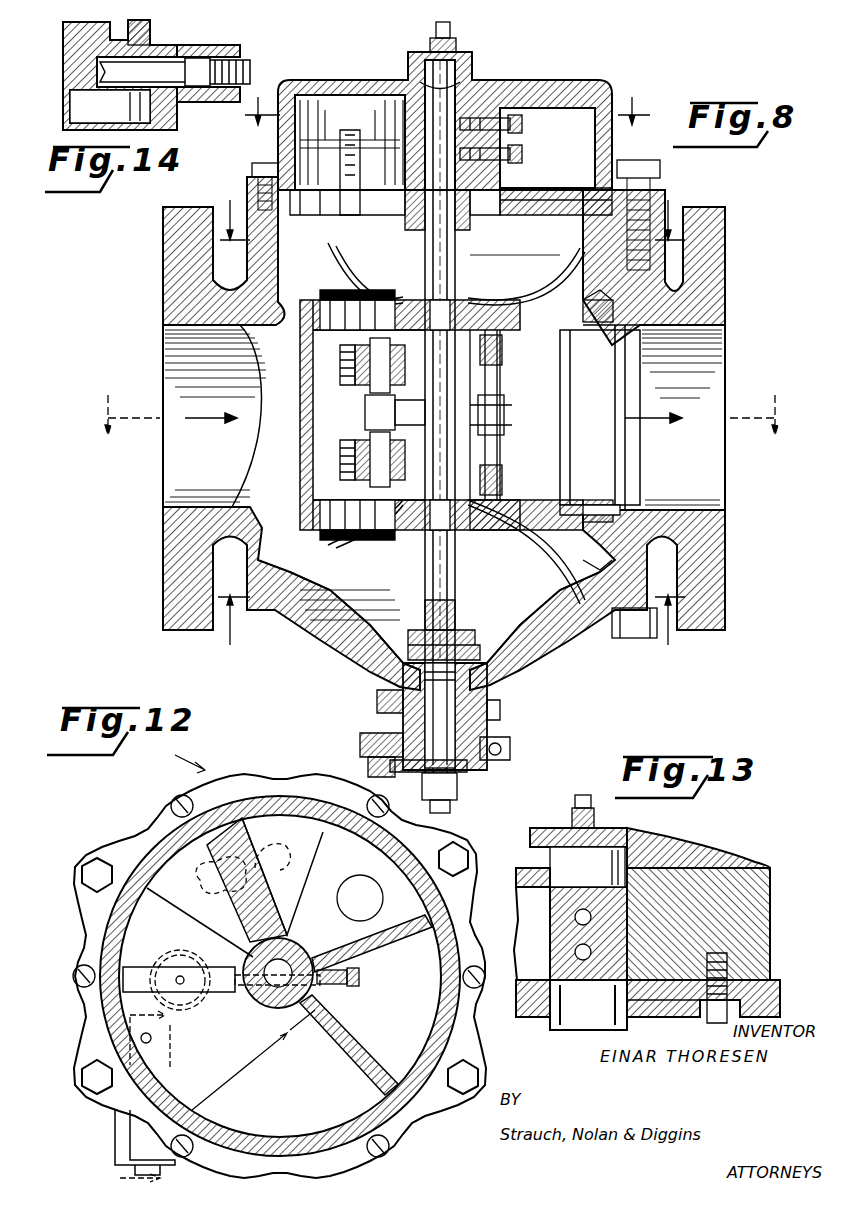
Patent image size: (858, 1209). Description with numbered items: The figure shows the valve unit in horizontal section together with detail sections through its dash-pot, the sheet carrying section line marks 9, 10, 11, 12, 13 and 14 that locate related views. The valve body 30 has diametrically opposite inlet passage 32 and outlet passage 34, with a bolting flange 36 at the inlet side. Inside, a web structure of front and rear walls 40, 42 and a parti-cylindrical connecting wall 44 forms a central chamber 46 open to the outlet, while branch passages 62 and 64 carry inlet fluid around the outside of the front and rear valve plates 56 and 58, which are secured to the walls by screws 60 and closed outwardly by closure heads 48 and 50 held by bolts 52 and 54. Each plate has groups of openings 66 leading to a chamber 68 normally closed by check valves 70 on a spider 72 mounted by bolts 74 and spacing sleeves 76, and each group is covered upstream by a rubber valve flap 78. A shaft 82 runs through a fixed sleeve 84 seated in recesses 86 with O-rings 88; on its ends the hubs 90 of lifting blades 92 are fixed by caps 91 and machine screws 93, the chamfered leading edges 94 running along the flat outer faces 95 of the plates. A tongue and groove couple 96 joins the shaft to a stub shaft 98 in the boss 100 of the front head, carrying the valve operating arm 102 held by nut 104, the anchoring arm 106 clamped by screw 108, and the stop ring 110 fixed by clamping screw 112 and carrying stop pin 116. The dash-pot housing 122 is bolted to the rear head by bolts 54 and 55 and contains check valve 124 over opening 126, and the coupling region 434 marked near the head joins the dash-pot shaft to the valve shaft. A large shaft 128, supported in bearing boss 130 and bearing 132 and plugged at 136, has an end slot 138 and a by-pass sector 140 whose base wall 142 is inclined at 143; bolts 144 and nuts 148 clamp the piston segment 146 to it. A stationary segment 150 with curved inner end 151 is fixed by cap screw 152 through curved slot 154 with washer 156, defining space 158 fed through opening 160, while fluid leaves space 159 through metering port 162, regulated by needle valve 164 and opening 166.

In FIG. 8, the section line 9- 9 is at (438, 405).
In FIG. 8, the section line 10- 10 is at (454, 210).
In FIG. 8, the section line 11- 11 is at (451, 632).
In FIG. 8, the section line 12- 12 is at (446, 128).
In FIG. 12, the section line 13- 13 is at (245, 926).
In FIG. 12, the section line 14- 14 is at (134, 1085).
In FIG. 8, the valve body 30 is at (255, 262).
In FIG. 8, the inlet passage 32 is at (178, 480).
In FIG. 8, the outlet passage 34 is at (720, 345).
In FIG. 8, the bolting flange 36 is at (170, 606).
In FIG. 8, the front wall 40 is at (574, 505).
In FIG. 8, the rear wall 42 is at (601, 345).
In FIG. 8, the parti-cylindrical connecting wall 44 is at (268, 440).
In FIG. 8, the central chamber 46 is at (369, 415).
In FIG. 8, the front closure head 48 is at (340, 645).
In FIG. 8, the rear closure head 50 is at (555, 210).
In FIG. 13, the rear closure head 50 is at (660, 1010).
In FIG. 8, the bolts 52 is at (612, 625).
In FIG. 8, the bolts 54 is at (662, 168).
In FIG. 12, the bolts 54 is at (97, 860).
In FIG. 8, the bolts 55 is at (250, 170).
In FIG. 12, the bolts 55 is at (170, 805).
In FIG. 8, the front valve plate 56 is at (523, 530).
In FIG. 8, the rear valve plate 58 is at (513, 288).
In FIG. 8, the screws 60 is at (612, 503).
In FIG. 8, the branch passage 62 is at (270, 550).
In FIG. 8, the branch passage 64 is at (290, 310).
In FIG. 8, the openings 66 is at (357, 428).
In FIG. 8, the chamber 68 is at (345, 462).
In FIG. 8, the check valves 70 is at (339, 412).
In FIG. 8, the spider 72 is at (512, 405).
In FIG. 8, the bolts 74 is at (500, 385).
In FIG. 8, the spacing sleeves 76 is at (502, 360).
In FIG. 8, the valve flap 78 is at (340, 298).
In FIG. 8, the shaft 82 is at (425, 424).
In FIG. 8, the fixed sleeve 84 is at (380, 412).
In FIG. 8, the recesses 86 is at (425, 296).
In FIG. 8, the O-rings 88 is at (410, 415).
In FIG. 8, the hub 90 is at (412, 270).
In FIG. 8, the caps 91 is at (488, 232).
In FIG. 8, the lifting blades 92 is at (385, 605).
In FIG. 8, the machine screws 93 is at (402, 620).
In FIG. 8, the chamfered leading edges 94 is at (556, 265).
In FIG. 8, the flat outer faces 95 is at (585, 298).
In FIG. 8, the tongue and groove driving couple 96 is at (478, 625).
In FIG. 8, the stub shaft 98 is at (460, 760).
In FIG. 8, the boss 100 is at (488, 680).
In FIG. 8, the valve operating arm 102 is at (458, 786).
In FIG. 8, the nut 104 is at (452, 806).
In FIG. 8, the anchoring arm 106 is at (385, 690).
In FIG. 8, the screw 108 is at (502, 710).
In FIG. 8, the stop ring 110 is at (356, 732).
In FIG. 8, the clamping screw 112 is at (512, 745).
In FIG. 8, the stop pin 116 is at (368, 765).
In FIG. 8, the dash-pot housing 122 is at (608, 80).
In FIG. 13, the dash-pot housing 122 is at (729, 851).
In FIG. 8, the check valve 124 is at (347, 213).
In FIG. 12, the check valve 124 is at (185, 1000).
In FIG. 8, the opening 126 is at (365, 183).
In FIG. 8, the shaft 128 is at (440, 58).
In FIG. 12, the shaft 128 is at (245, 995).
In FIG. 13, the shaft 128 is at (588, 1005).
In FIG. 8, the bearing boss 130 is at (405, 72).
In FIG. 13, the bearing boss 130 is at (630, 840).
In FIG. 8, the bearing 132 is at (401, 222).
In FIG. 13, the bearing 132 is at (540, 1017).
In FIG. 8, the plug 136 is at (452, 30).
In FIG. 13, the plug 136 is at (583, 808).
In FIG. 8, the slot 138 is at (466, 88).
In FIG. 13, the slot 138 is at (550, 860).
In FIG. 12, the by-pass sector 140 is at (240, 960).
In FIG. 12, the base wall 142 is at (265, 1000).
In FIG. 12, the oblique incline 143 is at (238, 928).
In FIG. 8, the bolts 144 is at (512, 140).
In FIG. 12, the bolts 144 is at (350, 972).
In FIG. 13, the bolts 144 is at (592, 952).
In FIG. 8, the piston segment 146 is at (560, 108).
In FIG. 12, the piston segment 146 is at (355, 1075).
In FIG. 8, the nuts 148 is at (524, 122).
In FIG. 12, the nuts 148 is at (358, 982).
In FIG. 12, the stationary segment 150 is at (308, 830).
In FIG. 13, the stationary segment 150 is at (760, 905).
In FIG. 12, the curved inner end 151 is at (313, 932).
In FIG. 12, the cap screw 152 is at (256, 874).
In FIG. 13, the cap screw 152 is at (760, 955).
In FIG. 12, the curved slot 154 is at (282, 857).
In FIG. 13, the curved slot 154 is at (780, 988).
In FIG. 12, the washer 156 is at (225, 885).
In FIG. 13, the washer 156 is at (707, 975).
In FIG. 12, the space 158 is at (331, 880).
In FIG. 12, the space 159 is at (253, 1099).
In FIG. 12, the opening 160 is at (352, 915).
In FIG. 12, the metering port 162 is at (152, 1040).
In FIG. 14, the metering port 162 is at (152, 32).
In FIG. 14, the needle valve 164 is at (252, 66).
In FIG. 14, the opening 166 is at (151, 75).
In FIG. 8, the guide bushing 434 is at (493, 211).